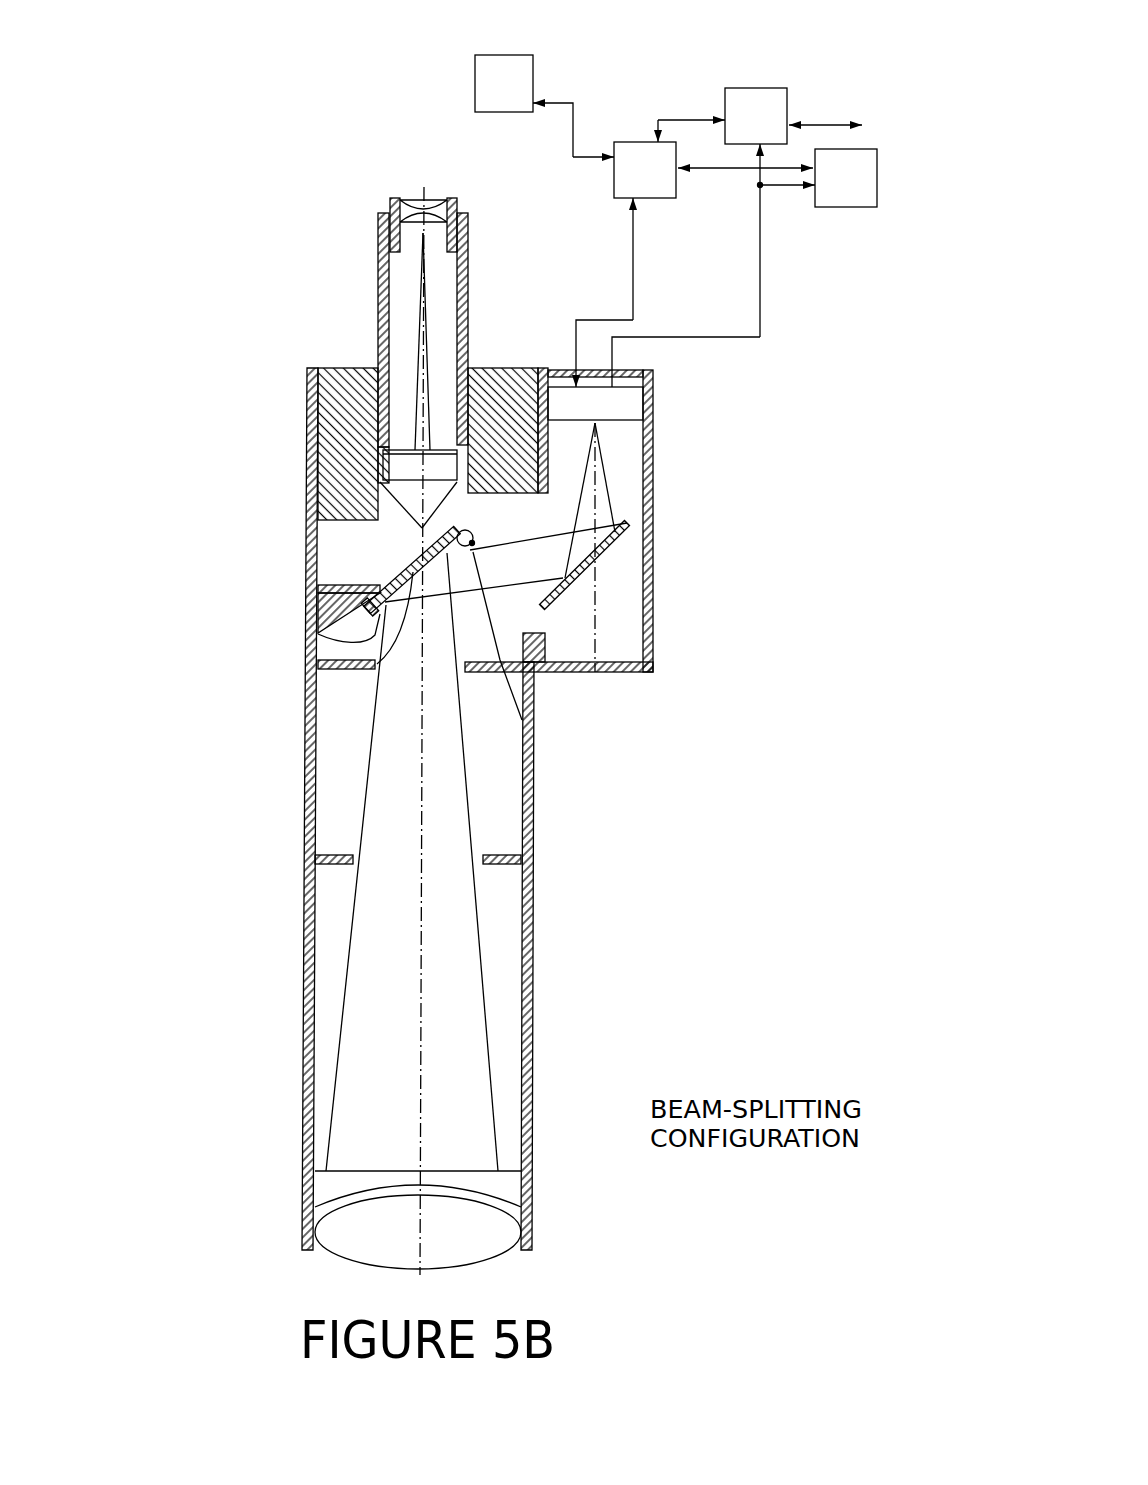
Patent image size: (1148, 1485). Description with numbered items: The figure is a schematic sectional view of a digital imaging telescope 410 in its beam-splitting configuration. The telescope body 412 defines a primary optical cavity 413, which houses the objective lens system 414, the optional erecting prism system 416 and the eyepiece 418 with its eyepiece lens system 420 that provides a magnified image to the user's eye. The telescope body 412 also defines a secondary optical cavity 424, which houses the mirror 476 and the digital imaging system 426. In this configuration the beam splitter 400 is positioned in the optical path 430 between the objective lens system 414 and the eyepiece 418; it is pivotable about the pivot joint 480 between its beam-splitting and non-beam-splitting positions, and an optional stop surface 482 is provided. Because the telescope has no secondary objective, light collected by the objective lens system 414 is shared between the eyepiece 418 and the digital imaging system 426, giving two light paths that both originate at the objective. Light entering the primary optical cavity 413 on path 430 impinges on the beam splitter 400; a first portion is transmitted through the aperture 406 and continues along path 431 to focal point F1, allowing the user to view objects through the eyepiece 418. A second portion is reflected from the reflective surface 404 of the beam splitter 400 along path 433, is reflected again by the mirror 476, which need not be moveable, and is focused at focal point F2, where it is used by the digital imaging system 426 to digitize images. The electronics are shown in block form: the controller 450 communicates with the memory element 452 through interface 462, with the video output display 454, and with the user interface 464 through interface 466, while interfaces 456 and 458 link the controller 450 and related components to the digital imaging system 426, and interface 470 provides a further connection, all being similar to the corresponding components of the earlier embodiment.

The eyepiece 418 is at (357, 202).
The eyepiece lens system 420 is at (428, 190).
The focal point F1 is at (423, 233).
The path 431 is at (418, 397).
The erecting prism system 416 is at (400, 490).
The beam splitter 400 is at (397, 578).
The stop surface 482 is at (318, 586).
The reflective surface 404 is at (318, 633).
The aperture 406 is at (380, 667).
The optical path 430 is at (368, 763).
The digital imaging telescope 410 is at (227, 838).
The telescope body 412 is at (306, 1015).
The objective lens system 414 is at (298, 1220).
The primary optical cavity 413 is at (500, 952).
The path 433 is at (533, 745).
The pivot joint 480 is at (545, 662).
The mirror 476 is at (593, 560).
The secondary optical cavity 424 is at (618, 492).
The digital imaging system 426 is at (593, 403).
The focal point F2 is at (597, 423).
The interface 458 is at (633, 258).
The interface 456 is at (760, 258).
The controller 450 is at (658, 148).
The memory element 452 is at (778, 98).
The interface 462 is at (692, 120).
The video output display 454 is at (835, 195).
The interface 470 is at (820, 122).
The interface 466 is at (573, 100).
The user interface 464 is at (485, 95).